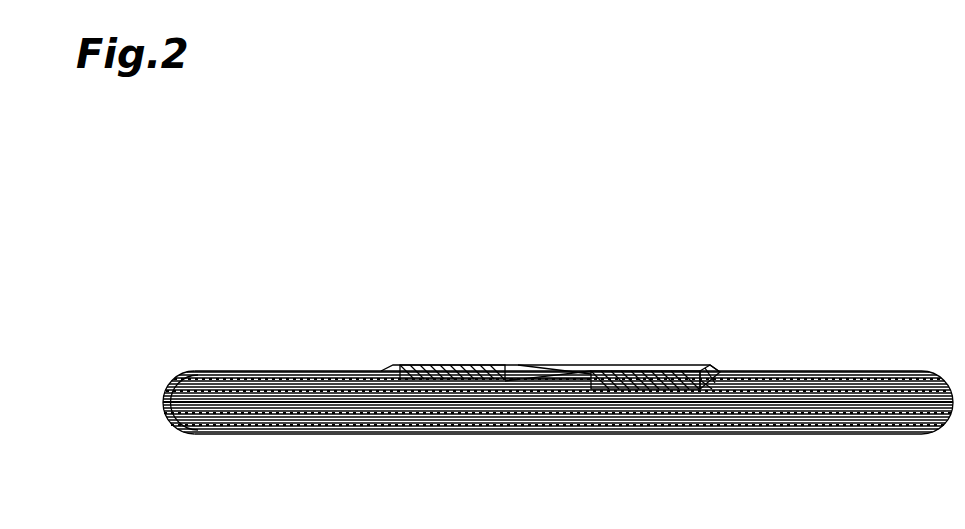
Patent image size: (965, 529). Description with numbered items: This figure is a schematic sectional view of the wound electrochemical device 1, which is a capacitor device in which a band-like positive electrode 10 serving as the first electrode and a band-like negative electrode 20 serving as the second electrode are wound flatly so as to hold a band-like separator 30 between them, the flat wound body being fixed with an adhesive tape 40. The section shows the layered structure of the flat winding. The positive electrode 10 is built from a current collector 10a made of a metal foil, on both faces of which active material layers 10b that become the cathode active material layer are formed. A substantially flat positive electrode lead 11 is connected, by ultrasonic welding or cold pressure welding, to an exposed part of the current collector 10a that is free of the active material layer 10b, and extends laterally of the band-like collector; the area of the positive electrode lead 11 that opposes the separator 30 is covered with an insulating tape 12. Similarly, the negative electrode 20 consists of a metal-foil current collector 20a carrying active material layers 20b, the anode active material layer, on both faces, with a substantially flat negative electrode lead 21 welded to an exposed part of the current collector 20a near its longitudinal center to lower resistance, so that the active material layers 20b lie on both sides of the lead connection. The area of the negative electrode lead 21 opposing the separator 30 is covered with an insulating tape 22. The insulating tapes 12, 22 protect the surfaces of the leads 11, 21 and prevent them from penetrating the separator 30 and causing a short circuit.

The wound electrochemical device 1 is at (862, 292).
The positive electrode 10 is at (551, 340).
The current collector 10a is at (558, 359).
The active material layer 10b is at (193, 363).
The positive electrode lead 11 is at (446, 366).
The insulating tape 12 is at (510, 368).
The negative electrode 20 is at (558, 459).
The current collector 20a is at (370, 412).
The active material layer 20b is at (395, 470).
The negative electrode lead 21 is at (640, 366).
The insulating tape 22 is at (694, 366).
The separator 30 is at (540, 427).
The adhesive tape 40 is at (160, 422).